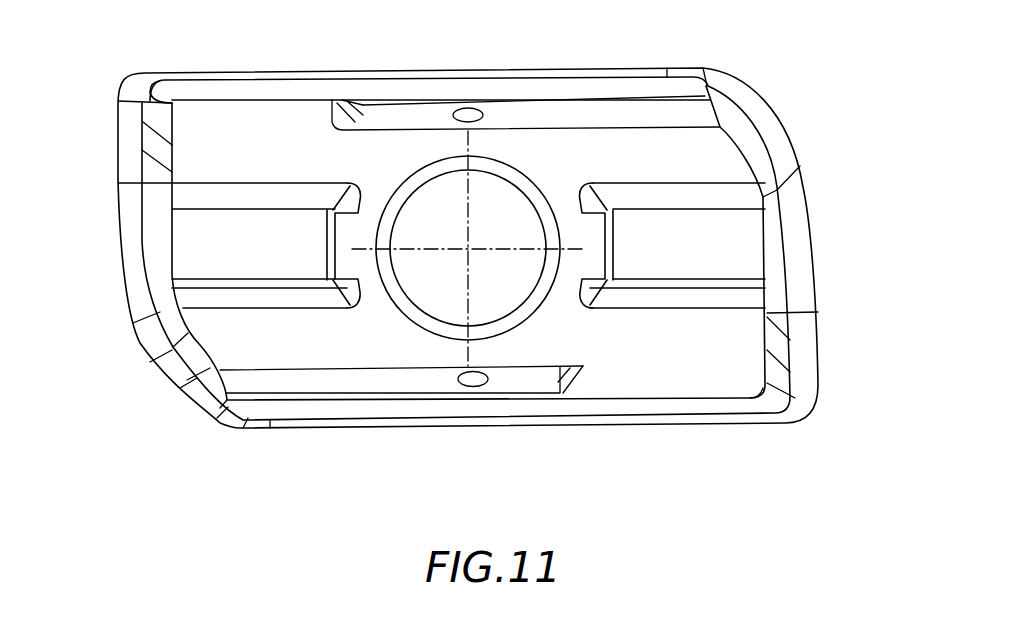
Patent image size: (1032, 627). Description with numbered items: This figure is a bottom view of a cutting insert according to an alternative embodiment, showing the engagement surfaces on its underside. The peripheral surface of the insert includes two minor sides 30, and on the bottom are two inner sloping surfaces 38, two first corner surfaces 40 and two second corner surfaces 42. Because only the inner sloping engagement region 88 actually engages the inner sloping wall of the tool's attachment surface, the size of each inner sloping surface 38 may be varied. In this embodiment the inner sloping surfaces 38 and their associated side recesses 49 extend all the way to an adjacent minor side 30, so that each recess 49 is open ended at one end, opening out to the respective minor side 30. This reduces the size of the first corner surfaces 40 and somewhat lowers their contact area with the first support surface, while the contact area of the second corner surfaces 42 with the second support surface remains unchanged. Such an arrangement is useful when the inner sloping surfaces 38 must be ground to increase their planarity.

The minor side 30 is at (797, 250).
The inner sloping surface 38 is at (567, 117).
The first corner surface 40 is at (715, 165).
The second corner surface 42 is at (222, 142).
The side recess 49 is at (415, 117).
The inner sloping engagement region 88 is at (468, 117).